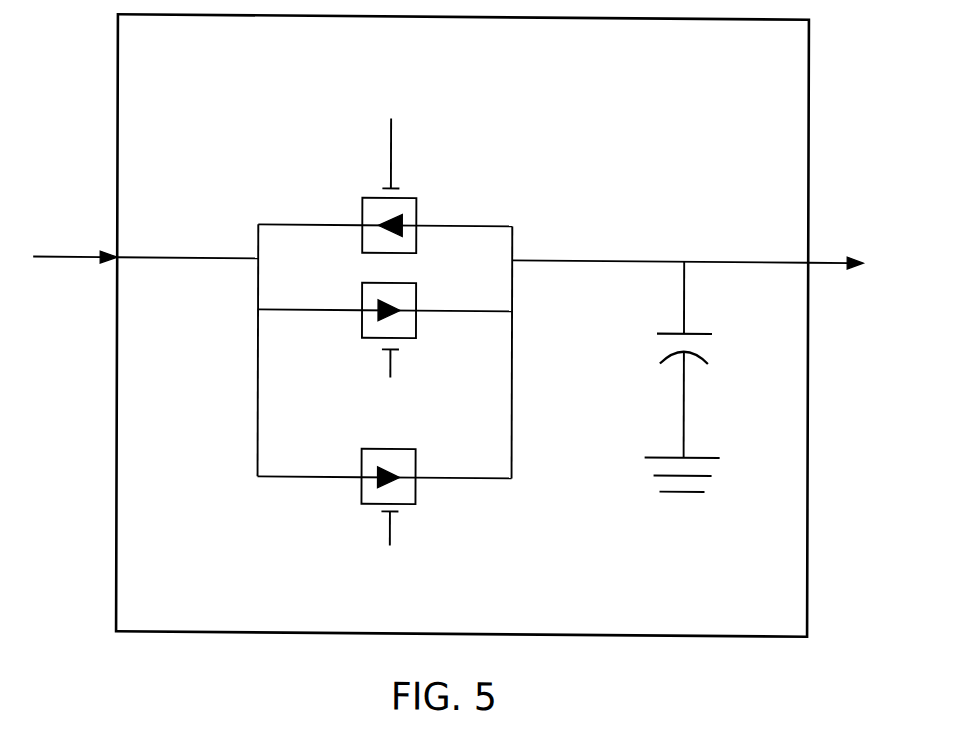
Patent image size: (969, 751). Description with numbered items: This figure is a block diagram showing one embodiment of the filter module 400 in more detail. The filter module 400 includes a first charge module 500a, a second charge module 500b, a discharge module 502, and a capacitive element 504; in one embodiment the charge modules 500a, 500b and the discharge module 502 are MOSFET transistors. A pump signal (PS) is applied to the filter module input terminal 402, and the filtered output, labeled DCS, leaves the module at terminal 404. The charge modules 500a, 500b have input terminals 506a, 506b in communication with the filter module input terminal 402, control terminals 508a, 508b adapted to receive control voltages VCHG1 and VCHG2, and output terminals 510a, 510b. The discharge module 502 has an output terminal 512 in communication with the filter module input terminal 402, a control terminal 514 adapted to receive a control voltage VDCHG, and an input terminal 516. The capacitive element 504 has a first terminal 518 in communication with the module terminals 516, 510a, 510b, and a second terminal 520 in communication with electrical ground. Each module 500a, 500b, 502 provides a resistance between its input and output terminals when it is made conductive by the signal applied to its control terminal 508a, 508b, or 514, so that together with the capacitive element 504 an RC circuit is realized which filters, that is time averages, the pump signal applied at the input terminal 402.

The filter module 400 is at (792, 65).
The filter module input terminal 402 is at (82, 256).
The DC supply output (DCS) 404 is at (822, 257).
The first charge module 500a is at (427, 361).
The second charge module 500b is at (427, 521).
The discharge module 502 is at (357, 254).
The capacitive element 504 is at (692, 376).
The input terminal of first charge module 506a is at (360, 313).
The input terminal of second charge module 506b is at (358, 480).
The control terminal of first charge module 508a is at (385, 358).
The control terminal of second charge module 508b is at (385, 525).
The output terminal of first charge module 510a is at (416, 313).
The output terminal of second charge module 510b is at (416, 480).
The output terminal of discharge module 512 is at (358, 226).
The control terminal of discharge module 514 is at (389, 182).
The input terminal of discharge module 516 is at (416, 226).
The first terminal of capacitive element 518 is at (683, 330).
The second terminal of capacitive element 520 is at (682, 363).